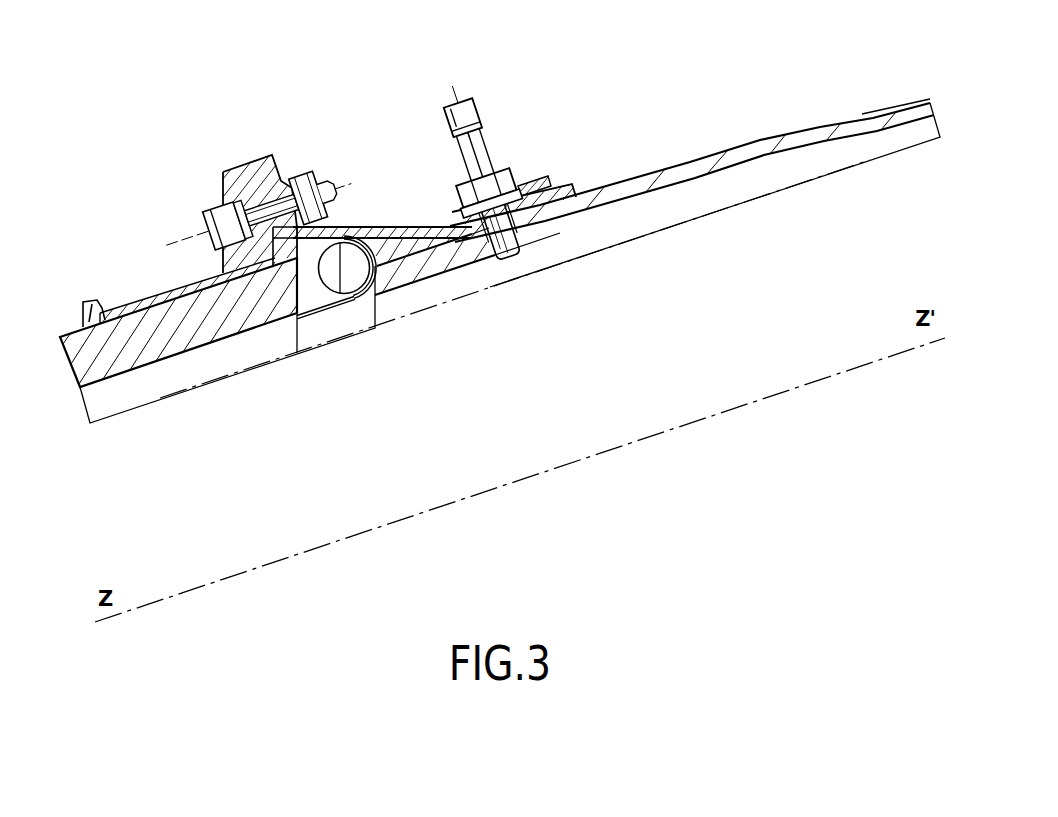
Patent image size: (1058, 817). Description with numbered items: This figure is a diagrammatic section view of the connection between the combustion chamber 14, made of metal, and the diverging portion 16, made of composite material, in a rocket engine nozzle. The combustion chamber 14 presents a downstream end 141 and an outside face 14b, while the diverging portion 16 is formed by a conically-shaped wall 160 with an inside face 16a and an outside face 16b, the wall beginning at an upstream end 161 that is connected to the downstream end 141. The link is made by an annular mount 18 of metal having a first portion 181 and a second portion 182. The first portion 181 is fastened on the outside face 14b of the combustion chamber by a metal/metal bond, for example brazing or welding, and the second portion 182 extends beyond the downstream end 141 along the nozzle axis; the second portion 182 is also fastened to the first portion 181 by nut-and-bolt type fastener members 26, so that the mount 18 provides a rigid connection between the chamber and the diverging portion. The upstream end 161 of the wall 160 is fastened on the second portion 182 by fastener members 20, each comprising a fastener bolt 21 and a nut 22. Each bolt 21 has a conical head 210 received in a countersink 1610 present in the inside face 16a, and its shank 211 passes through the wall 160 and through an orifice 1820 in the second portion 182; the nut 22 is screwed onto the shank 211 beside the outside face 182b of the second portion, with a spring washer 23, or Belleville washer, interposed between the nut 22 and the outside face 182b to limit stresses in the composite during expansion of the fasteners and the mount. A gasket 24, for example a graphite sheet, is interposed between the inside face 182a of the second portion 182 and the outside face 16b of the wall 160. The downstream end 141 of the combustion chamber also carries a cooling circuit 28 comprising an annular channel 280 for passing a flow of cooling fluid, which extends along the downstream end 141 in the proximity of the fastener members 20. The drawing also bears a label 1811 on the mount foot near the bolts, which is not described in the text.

The combustion chamber 14 is at (202, 345).
The outside face of the combustion chamber 14b is at (90, 310).
The downstream end of the combustion chamber 141 is at (213, 332).
The diverging portion 16 is at (695, 149).
The inside face of the wall 16a is at (706, 190).
The outside face of the wall 16b is at (684, 165).
The conically-shaped wall 160 is at (857, 121).
The upstream end of the diverging portion 161 is at (692, 194).
The countersink 1610 is at (490, 268).
The annular mount 18 is at (229, 185).
The first portion of the annular mount 181 is at (157, 291).
The second leg of clamp 1811 is at (537, 206).
The second portion of the annular mount 182 is at (455, 271).
The inside face of the second portion 182a is at (448, 280).
The outside face of the second portion 182b is at (350, 226).
The orifice 1820 is at (535, 176).
The fastener members 20 is at (505, 193).
The fastener bolt 21 is at (514, 207).
The conical head 210 is at (512, 252).
The shank 211 is at (463, 117).
The nut 22 is at (486, 188).
The spring washer 23 is at (492, 203).
The gasket 24 is at (418, 290).
The fastener members 26 is at (306, 160).
The cooling circuit 28 is at (360, 323).
The annular channel 280 is at (350, 300).